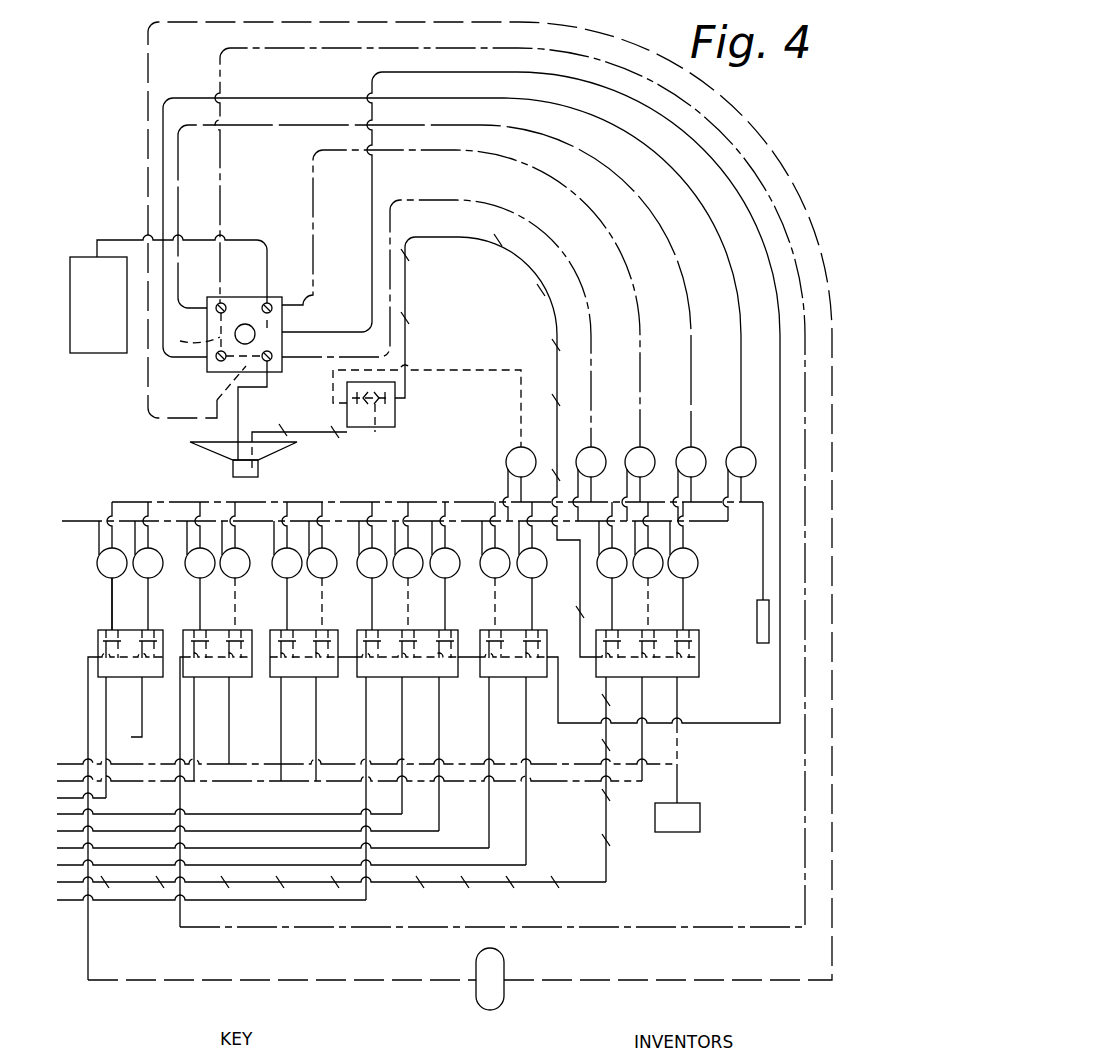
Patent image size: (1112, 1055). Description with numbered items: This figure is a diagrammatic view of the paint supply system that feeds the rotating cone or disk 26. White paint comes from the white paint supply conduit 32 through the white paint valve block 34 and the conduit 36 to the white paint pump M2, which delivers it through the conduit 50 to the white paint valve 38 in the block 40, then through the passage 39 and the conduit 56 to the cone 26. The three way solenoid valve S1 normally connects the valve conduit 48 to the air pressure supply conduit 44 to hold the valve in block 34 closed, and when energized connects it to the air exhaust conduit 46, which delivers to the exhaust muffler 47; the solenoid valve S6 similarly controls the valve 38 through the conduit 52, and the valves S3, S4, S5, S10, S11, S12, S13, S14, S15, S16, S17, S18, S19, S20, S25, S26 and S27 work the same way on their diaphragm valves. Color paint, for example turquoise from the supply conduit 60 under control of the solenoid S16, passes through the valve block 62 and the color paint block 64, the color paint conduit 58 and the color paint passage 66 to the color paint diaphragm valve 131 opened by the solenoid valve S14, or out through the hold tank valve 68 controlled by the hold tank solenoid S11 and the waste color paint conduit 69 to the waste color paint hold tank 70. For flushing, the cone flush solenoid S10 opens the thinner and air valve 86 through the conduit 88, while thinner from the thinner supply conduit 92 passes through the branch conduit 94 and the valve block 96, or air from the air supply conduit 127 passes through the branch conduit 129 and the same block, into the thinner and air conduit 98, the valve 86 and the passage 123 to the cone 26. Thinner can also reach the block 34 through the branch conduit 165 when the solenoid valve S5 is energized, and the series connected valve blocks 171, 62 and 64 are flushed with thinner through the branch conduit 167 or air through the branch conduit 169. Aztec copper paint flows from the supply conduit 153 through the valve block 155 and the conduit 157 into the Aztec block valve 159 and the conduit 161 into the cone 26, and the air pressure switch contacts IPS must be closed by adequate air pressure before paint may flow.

The rotating cone or disk 26 is at (213, 447).
The white paint supply conduit 32 is at (108, 797).
The white paint valve block 34 is at (98, 643).
The white paint conduit 36 is at (88, 963).
The white paint valve 38 is at (217, 362).
The passage 39 is at (218, 392).
The white and color paint block 40 is at (278, 296).
The air pressure supply conduit 44 is at (78, 521).
The air exhaust conduit 46 is at (417, 502).
The exhaust muffler 47 is at (760, 643).
The valve conduit 48 is at (112, 593).
The white paint pump delivery conduit 50 is at (733, 976).
The conduit 52 is at (312, 96).
The conduit 56 is at (240, 410).
The color paint conduit 58 is at (372, 268).
The turquoise paint supply conduit 60 is at (217, 813).
The valve block 62 is at (312, 685).
The color paint block 64 is at (485, 675).
The color paint passage 66 is at (288, 333).
The hold tank valve 68 is at (264, 304).
The waste color paint conduit 69 is at (250, 236).
The waste color paint hold tank 70 is at (78, 258).
The thinner and air valve 86 is at (218, 304).
The conduit 88 is at (293, 127).
The thinner supply conduit 92 is at (287, 780).
The branch conduit 94 is at (195, 743).
The valve block 96 is at (250, 680).
The thinner and air conduit 98 is at (337, 932).
The passage 123 is at (193, 329).
The air supply conduit 127 is at (60, 764).
The branch conduit / color valve conduit 129 is at (497, 208).
The color paint diaphragm valve 131 is at (270, 362).
The Aztec copper supply conduit 153 is at (503, 882).
The valve block 155 is at (689, 672).
The conduit 157 is at (407, 348).
The Aztec block valve 159 is at (393, 420).
The conduit 161 is at (347, 437).
The branch conduit 165 is at (141, 721).
The branch conduit 167 is at (318, 746).
The branch conduit 169 is at (281, 752).
The valve block 171 is at (352, 680).
The white paint pump M2 is at (475, 996).
The air pressure switch contacts IPS is at (677, 754).
The white paint valve S1 is at (115, 569).
The solenoid air valve S3 is at (238, 569).
The thinner solenoid valve S4 is at (203, 569).
The solenoid valve S5 is at (151, 569).
The three way solenoid valve S6 is at (731, 452).
The cone flush solenoid S10 is at (681, 452).
The hold tank solenoid S11 is at (629, 452).
The thinner solenoid valve S12 is at (325, 569).
The air flush solenoid valve S13 is at (290, 569).
The color paint solenoid valve S14 is at (582, 453).
The special color solenoid S15 is at (375, 569).
The turquoise solenoid S16 is at (411, 569).
The charcoal solenoid S17 is at (448, 569).
The pink solenoid S18 is at (498, 569).
The yellow solenoid S19 is at (535, 569).
The Aztec paint valve S20 is at (615, 569).
The Aztec thinner solenoid S25 is at (651, 569).
The Aztec copper air solenoid S26 is at (686, 569).
The Aztec block valve S27 is at (513, 450).